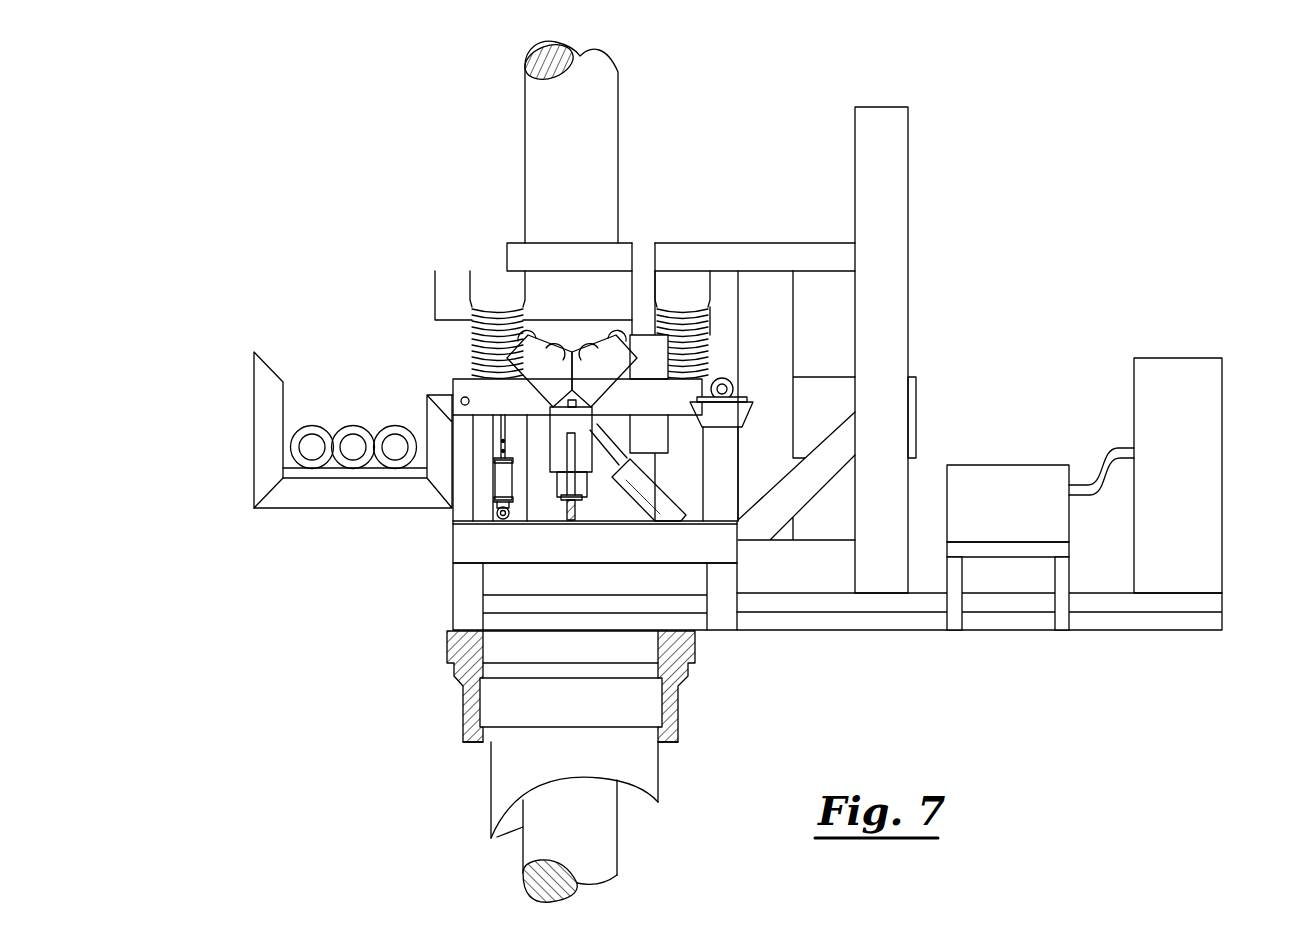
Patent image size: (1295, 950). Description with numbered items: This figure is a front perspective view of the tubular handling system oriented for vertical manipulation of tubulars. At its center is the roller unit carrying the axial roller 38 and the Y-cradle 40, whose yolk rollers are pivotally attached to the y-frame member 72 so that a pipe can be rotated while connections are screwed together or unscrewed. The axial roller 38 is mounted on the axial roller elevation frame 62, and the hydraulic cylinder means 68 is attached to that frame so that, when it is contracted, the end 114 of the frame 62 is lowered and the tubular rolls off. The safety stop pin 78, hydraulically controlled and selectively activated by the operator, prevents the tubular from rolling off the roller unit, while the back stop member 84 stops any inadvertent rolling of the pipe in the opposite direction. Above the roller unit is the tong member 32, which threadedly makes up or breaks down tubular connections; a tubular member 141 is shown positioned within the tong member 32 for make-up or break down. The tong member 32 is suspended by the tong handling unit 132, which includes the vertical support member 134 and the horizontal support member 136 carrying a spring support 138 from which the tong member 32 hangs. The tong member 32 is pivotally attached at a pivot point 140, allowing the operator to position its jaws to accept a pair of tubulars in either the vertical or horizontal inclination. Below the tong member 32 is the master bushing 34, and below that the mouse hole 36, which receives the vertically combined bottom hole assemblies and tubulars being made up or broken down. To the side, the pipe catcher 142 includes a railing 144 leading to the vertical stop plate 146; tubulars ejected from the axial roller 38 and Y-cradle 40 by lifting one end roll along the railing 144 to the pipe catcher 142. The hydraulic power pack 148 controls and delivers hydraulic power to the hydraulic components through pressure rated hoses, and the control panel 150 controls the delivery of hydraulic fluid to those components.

The tong member 32 is at (448, 285).
The master bushing 34 is at (455, 655).
The mouse hole 36 is at (502, 778).
The axial roller 38 is at (572, 345).
The Y-cradle 40 is at (478, 357).
The axial roller elevation frame 62 is at (475, 388).
The hydraulic cylinder means 68 is at (653, 507).
The y-frame member 72 is at (732, 392).
The safety stop pin 78 is at (500, 438).
The back stop member 84 is at (645, 250).
The end of the axial roller frame 114 is at (460, 400).
The tong handling unit 132 is at (945, 204).
The vertical support member 134 is at (888, 292).
The horizontal support member 136 is at (775, 253).
The spring support 138 is at (510, 330).
The pivot point 140 is at (913, 417).
The tubular member 141 is at (588, 97).
The pipe catcher 142 is at (273, 479).
The railing 144 is at (353, 495).
The vertical stop plate 146 is at (260, 398).
The hydraulic power pack 148 is at (1203, 427).
The control panel 150 is at (998, 483).